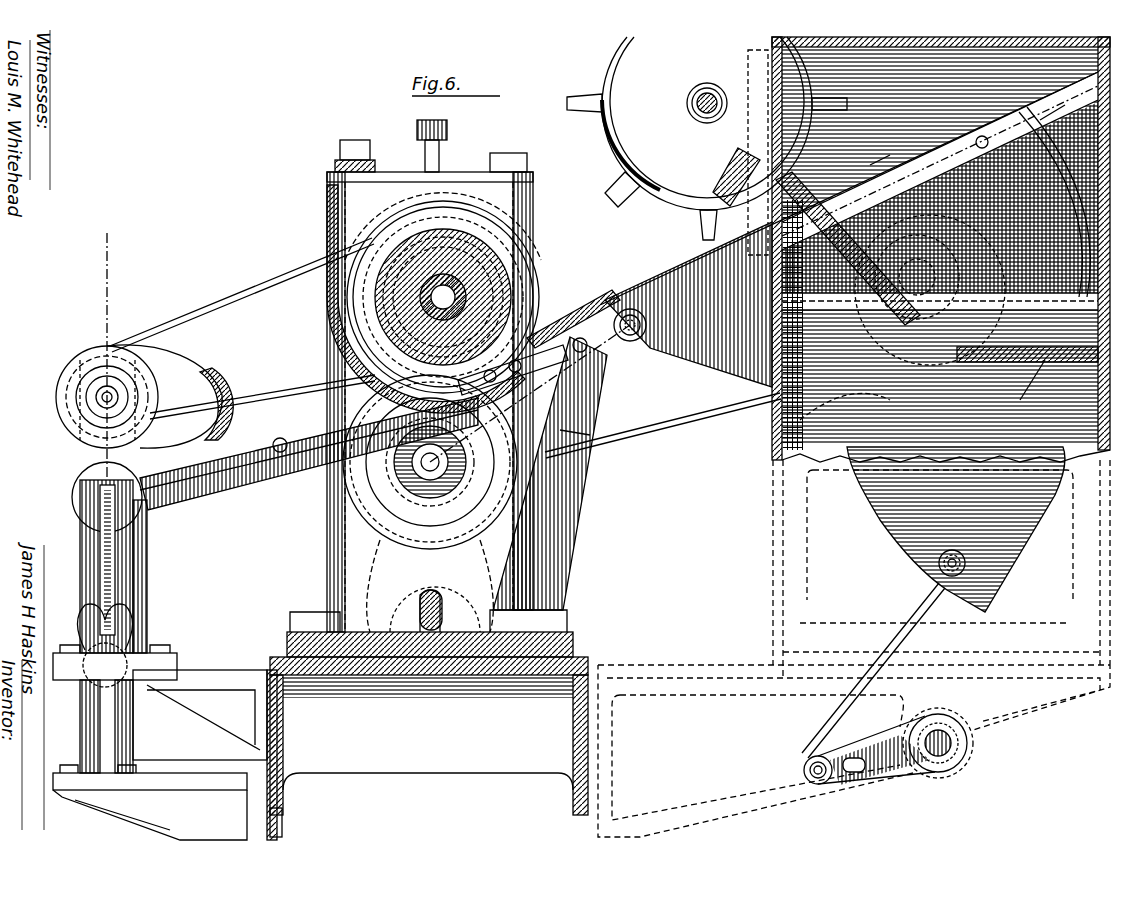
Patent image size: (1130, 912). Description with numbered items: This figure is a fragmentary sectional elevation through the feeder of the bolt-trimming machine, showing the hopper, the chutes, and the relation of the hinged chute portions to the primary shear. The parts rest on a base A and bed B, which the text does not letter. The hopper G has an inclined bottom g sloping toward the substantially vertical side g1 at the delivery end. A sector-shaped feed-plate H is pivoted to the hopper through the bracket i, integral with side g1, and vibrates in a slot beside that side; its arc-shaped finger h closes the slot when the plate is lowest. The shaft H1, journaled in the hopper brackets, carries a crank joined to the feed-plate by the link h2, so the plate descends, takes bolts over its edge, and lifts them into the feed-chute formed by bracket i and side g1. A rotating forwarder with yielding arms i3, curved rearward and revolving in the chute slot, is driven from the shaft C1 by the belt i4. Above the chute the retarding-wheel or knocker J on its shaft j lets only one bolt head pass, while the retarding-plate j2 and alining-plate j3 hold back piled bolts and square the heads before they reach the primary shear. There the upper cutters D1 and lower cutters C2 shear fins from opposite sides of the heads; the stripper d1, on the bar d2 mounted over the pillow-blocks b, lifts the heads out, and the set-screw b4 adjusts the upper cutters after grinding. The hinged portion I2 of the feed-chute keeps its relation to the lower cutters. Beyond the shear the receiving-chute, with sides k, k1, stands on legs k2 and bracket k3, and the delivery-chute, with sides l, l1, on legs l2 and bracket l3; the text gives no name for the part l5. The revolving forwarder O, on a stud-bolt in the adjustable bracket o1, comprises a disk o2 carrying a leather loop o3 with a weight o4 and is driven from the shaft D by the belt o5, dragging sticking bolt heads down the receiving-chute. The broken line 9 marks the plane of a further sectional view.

The base A is at (429, 747).
The bed plate B is at (575, 637).
The shaft C1 is at (442, 462).
The cutters C2 is at (380, 530).
The shaft D is at (440, 280).
The cutters D1 is at (440, 233).
The hopper G is at (770, 458).
The inclined bottom g is at (1025, 400).
The side g1 is at (1052, 107).
The feed-plate H is at (882, 520).
The shaft H1 is at (968, 744).
The arc-shaped finger h is at (722, 160).
The pitman or link h2 is at (852, 718).
The retarding-wheel or knocker J is at (603, 77).
The shaft j is at (692, 92).
The retarding-plate j2 is at (620, 300).
The alining-plate j3 is at (556, 318).
The bracket i is at (604, 398).
The yielding arms i3 is at (874, 153).
The belt i4 is at (655, 440).
The hinged portion I2 is at (562, 427).
The pillow-blocks b is at (330, 338).
The set-screw b4 is at (448, 133).
The stripper d1 is at (327, 212).
The bar d2 is at (373, 165).
The side k is at (263, 480).
The side k1 is at (215, 497).
The legs k2 is at (147, 595).
The bracket k3 is at (232, 672).
The side l is at (80, 563).
The side l1 is at (116, 565).
The legs l2 is at (80, 758).
The bracket l3 is at (180, 792).
The spring l5 is at (78, 600).
The forwarder O is at (62, 386).
The bracket o1 is at (85, 463).
The disk o2 is at (62, 405).
The loop o3 is at (206, 373).
The weight o4 is at (224, 403).
The belt o5 is at (255, 308).
The section line 9 is at (98, 272).